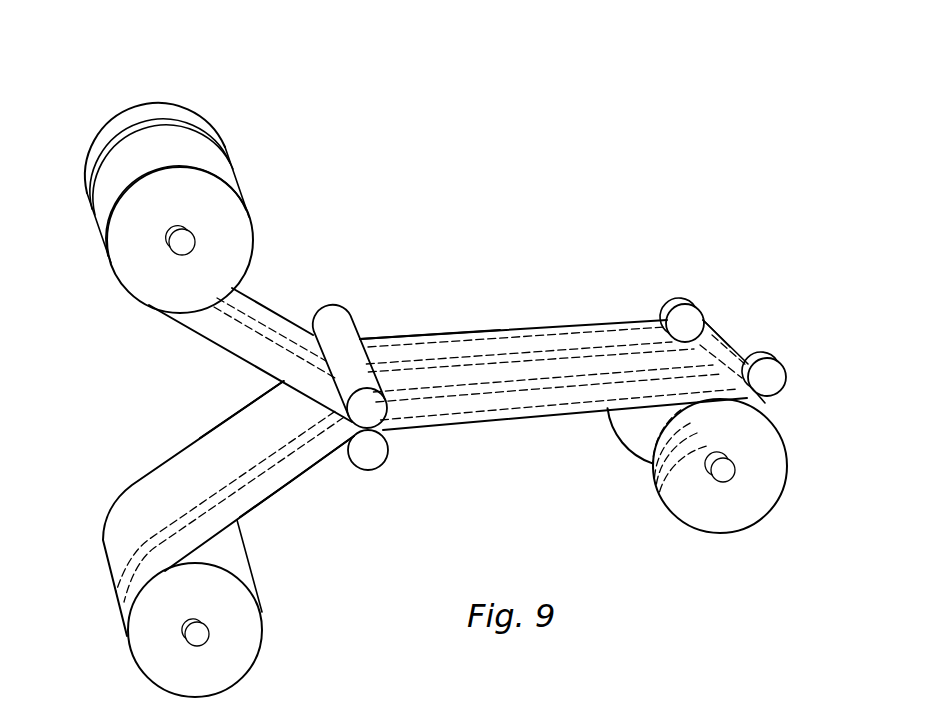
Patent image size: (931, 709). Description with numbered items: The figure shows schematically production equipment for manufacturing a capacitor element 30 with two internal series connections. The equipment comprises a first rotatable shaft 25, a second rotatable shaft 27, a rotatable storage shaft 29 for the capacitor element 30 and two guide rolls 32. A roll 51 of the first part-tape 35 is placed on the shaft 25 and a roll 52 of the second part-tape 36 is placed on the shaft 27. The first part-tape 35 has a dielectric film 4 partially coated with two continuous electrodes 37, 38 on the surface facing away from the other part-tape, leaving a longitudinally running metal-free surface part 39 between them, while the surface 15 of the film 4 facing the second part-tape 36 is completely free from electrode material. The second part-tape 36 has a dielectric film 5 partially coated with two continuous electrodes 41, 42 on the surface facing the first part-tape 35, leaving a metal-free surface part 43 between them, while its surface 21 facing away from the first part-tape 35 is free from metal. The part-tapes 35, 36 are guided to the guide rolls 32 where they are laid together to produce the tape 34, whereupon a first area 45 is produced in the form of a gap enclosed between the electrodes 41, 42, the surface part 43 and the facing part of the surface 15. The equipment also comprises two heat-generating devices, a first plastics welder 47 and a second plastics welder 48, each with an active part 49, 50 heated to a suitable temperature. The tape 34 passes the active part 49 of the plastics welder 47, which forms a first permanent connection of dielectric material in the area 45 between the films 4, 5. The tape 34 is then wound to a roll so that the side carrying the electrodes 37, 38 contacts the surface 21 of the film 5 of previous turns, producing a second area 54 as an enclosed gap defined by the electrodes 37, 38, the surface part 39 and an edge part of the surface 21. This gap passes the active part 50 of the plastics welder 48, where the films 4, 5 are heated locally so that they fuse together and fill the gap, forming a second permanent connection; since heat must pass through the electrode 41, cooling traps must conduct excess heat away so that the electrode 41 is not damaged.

The dielectric film 4 is at (177, 453).
The dielectric film 5 is at (424, 378).
The surface 15 is at (213, 488).
The surface 21 is at (213, 320).
The first rotatable shaft 25 is at (212, 640).
The second rotatable shaft 27 is at (185, 247).
The rotatable storage shaft 29 is at (724, 470).
The capacitor element 30 is at (747, 496).
The guide rolls 32 is at (328, 318).
The tape 34 is at (540, 310).
The first part-tape 35 is at (293, 494).
The second part-tape 36 is at (190, 348).
The electrode 37 is at (302, 456).
The electrode 38 is at (210, 431).
The surface part 39 is at (246, 512).
The electrode 41 is at (176, 152).
The electrode 42 is at (145, 103).
The surface part 43 is at (100, 148).
The first area 45 is at (443, 358).
The first plastics welder 47 is at (700, 295).
The second plastics welder 48 is at (788, 350).
The active part 49 is at (687, 325).
The active part 50 is at (763, 377).
The roll 51 is at (237, 653).
The roll 52 is at (220, 208).
The second area 54 is at (720, 347).